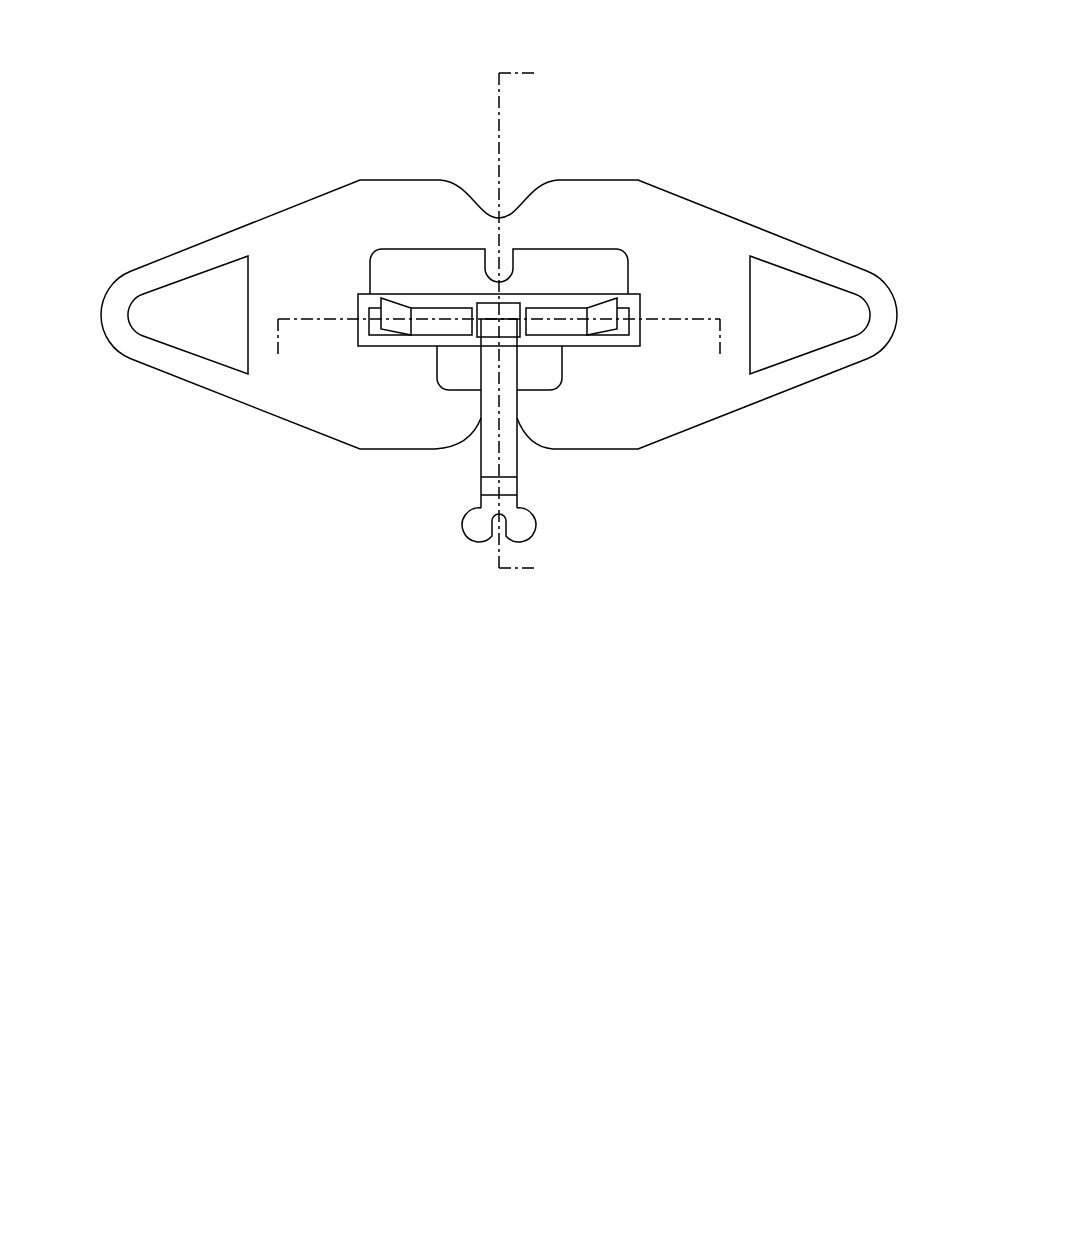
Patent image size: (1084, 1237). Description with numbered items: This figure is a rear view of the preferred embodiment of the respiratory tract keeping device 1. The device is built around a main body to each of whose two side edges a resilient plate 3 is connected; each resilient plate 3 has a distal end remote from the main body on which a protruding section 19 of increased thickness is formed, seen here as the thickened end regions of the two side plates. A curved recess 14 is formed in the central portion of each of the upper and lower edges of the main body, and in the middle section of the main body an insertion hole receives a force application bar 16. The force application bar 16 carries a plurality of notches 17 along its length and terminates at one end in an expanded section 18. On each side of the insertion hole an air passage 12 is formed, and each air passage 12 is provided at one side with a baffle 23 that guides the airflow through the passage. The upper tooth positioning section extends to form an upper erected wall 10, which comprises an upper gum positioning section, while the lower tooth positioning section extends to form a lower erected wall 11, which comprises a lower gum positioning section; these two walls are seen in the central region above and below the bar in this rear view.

The respiratory tract keeping device 1 is at (262, 190).
The resilient plate 3 is at (782, 255).
The upper erected wall 10 is at (605, 275).
The lower erected wall 11 is at (467, 375).
The air passage 12 is at (450, 325).
The curved recess 14 is at (486, 205).
The force application bar 16 is at (513, 407).
The notch 17 is at (512, 483).
The expanded section 18 is at (483, 533).
The protruding section 19 is at (178, 312).
The baffle 23 is at (405, 322).